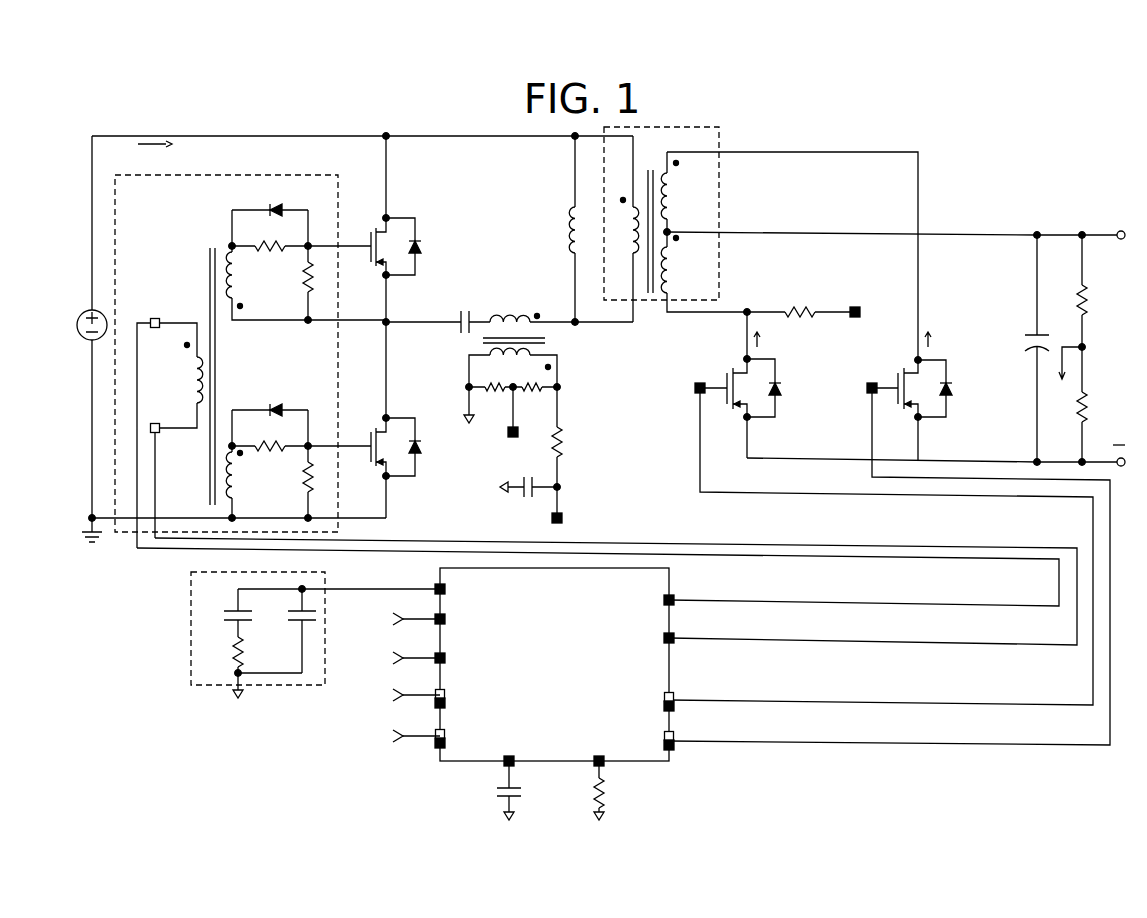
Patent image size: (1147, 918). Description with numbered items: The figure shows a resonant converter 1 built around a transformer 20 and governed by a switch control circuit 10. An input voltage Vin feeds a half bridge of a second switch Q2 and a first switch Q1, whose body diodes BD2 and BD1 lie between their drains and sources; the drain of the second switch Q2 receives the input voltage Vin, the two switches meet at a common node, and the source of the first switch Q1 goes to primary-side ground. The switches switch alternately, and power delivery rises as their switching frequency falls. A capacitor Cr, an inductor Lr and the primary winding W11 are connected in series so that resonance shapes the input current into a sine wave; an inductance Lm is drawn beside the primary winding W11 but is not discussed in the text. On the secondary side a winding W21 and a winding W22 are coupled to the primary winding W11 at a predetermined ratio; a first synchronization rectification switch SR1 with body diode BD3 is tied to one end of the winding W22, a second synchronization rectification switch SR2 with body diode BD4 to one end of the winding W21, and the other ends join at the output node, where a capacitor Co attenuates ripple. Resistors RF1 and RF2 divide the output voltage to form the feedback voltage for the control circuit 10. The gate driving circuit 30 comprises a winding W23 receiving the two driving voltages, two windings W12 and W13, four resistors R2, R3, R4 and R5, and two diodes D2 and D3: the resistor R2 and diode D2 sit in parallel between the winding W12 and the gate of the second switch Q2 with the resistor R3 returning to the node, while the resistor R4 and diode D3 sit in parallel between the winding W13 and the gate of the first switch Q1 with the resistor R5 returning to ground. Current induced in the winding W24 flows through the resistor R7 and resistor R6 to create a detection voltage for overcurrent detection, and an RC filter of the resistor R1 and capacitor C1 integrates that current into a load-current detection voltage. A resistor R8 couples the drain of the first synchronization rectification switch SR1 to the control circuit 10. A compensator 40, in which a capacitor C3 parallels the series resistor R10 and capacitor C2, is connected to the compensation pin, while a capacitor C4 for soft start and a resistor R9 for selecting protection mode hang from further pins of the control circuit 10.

The resonant converter 1 is at (1062, 158).
The switch control circuit 10 is at (676, 749).
The transformer 20 is at (722, 143).
The gate driving circuit 30 is at (232, 175).
The compensator 40 is at (190, 623).
The input voltage Vin is at (77, 327).
The first switch Q1 is at (387, 420).
The second switch Q2 is at (387, 229).
The body diode BD1 is at (420, 447).
The body diode BD2 is at (420, 246).
The diode D2 is at (270, 217).
The diode D3 is at (270, 417).
The resistor R2 is at (270, 238).
The resistor R3 is at (318, 265).
The resistor R4 is at (270, 438).
The resistor R5 is at (318, 464).
The winding W12 is at (306, 283).
The winding W13 is at (252, 482).
The winding W23 is at (170, 434).
The capacitor Cr is at (438, 312).
The inductor Lr is at (532, 306).
The magnetizing inductance Lm is at (557, 229).
The primary winding W11 is at (616, 229).
The winding W21 is at (688, 192).
The winding W22 is at (704, 272).
The winding W24 is at (528, 361).
The resistor R6 is at (491, 397).
The resistor R7 is at (535, 397).
The resistor R1 is at (568, 437).
The capacitor C1 is at (528, 496).
The resistor R8 is at (798, 303).
The first synchronization rectification switch SR1 is at (775, 417).
The second synchronization rectification switch SR2 is at (946, 417).
The body diode BD3 is at (780, 388).
The body diode BD4 is at (951, 388).
The capacitor Co is at (1042, 348).
The resistor RF1 is at (1097, 291).
The resistor RF2 is at (1097, 404).
The capacitor C2 is at (228, 613).
The capacitor C3 is at (291, 631).
The resistor R10 is at (250, 663).
The capacitor C4 is at (496, 793).
The resistor R9 is at (611, 793).